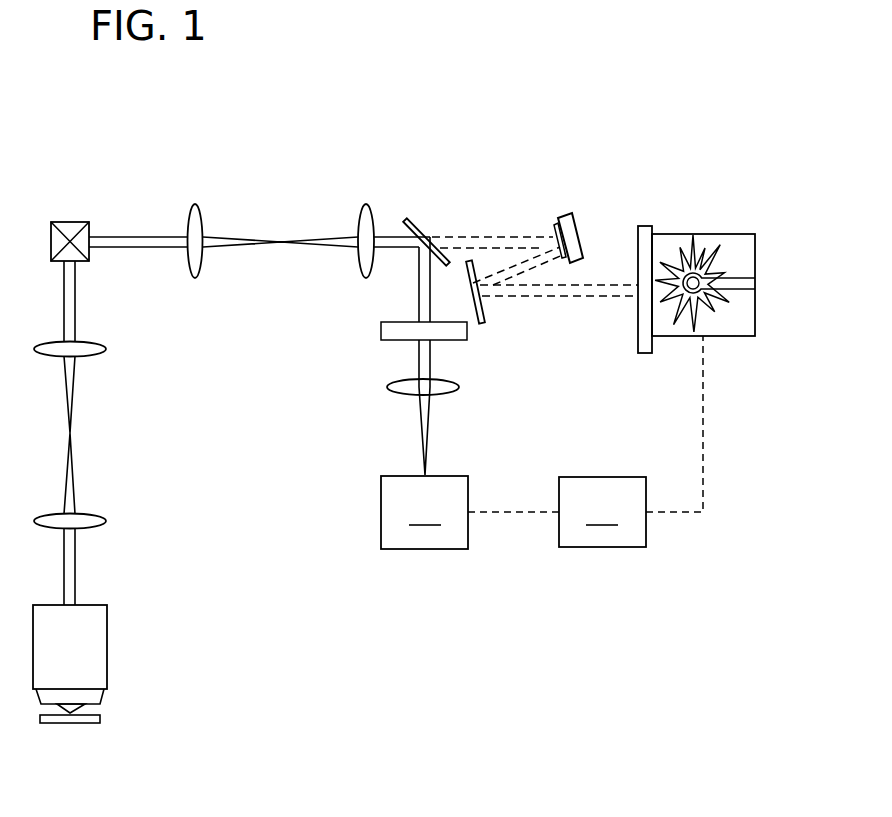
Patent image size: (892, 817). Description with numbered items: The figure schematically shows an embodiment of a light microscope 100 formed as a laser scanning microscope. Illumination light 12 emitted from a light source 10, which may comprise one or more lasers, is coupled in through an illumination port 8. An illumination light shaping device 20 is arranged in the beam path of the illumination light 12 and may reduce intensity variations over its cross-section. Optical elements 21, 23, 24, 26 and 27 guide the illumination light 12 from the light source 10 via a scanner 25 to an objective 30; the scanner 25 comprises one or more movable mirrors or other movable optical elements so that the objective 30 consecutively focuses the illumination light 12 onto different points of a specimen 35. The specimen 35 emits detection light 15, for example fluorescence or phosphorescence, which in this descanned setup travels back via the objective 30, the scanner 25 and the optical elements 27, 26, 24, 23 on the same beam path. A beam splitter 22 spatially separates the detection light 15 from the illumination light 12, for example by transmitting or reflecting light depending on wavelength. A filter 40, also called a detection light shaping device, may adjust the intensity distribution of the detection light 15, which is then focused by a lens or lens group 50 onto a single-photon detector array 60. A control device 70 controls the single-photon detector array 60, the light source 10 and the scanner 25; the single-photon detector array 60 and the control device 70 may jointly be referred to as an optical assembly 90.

The light microscope 100 is at (632, 34).
The illumination port 8 is at (650, 225).
The light source 10 is at (737, 234).
The illumination light 12 is at (585, 297).
The detection light 15 is at (418, 298).
The illumination light shaping device 20 is at (572, 222).
The optical element 21 is at (485, 316).
The beam splitter 22 is at (420, 228).
The optical element 23 is at (367, 207).
The optical element 24 is at (194, 205).
The scanner 25 is at (70, 221).
The optical element 26 is at (92, 349).
The optical element 27 is at (92, 520).
The objective 30 is at (88, 647).
The specimen 35 is at (100, 716).
The filter 40 is at (390, 330).
The lens or lens group 50 is at (390, 384).
The single-photon detector array 60 is at (424, 512).
The control device 70 is at (602, 512).
The optical assembly 90 is at (445, 579).